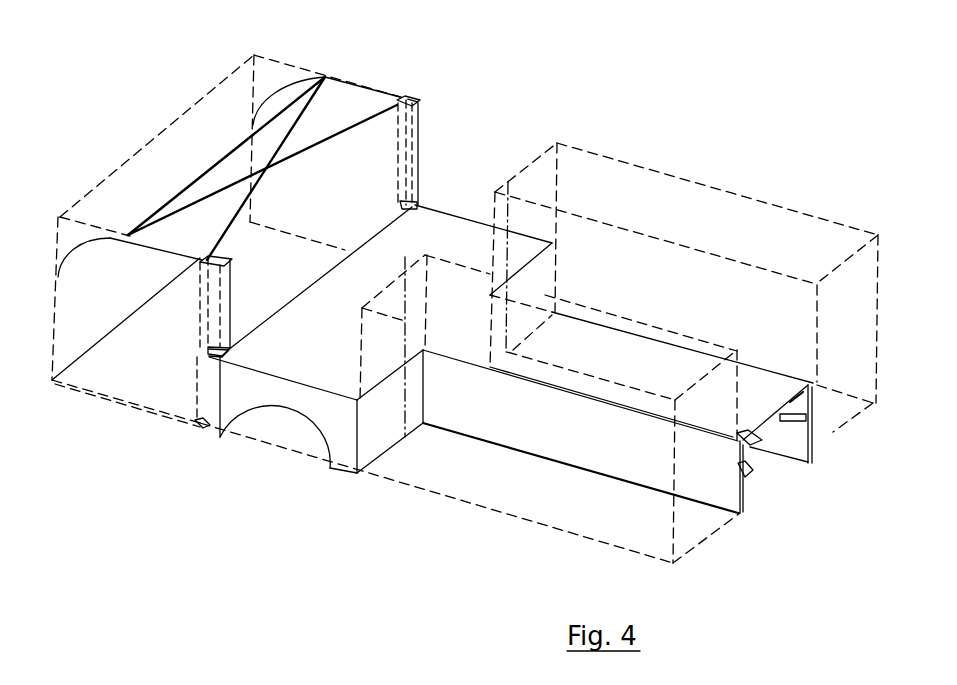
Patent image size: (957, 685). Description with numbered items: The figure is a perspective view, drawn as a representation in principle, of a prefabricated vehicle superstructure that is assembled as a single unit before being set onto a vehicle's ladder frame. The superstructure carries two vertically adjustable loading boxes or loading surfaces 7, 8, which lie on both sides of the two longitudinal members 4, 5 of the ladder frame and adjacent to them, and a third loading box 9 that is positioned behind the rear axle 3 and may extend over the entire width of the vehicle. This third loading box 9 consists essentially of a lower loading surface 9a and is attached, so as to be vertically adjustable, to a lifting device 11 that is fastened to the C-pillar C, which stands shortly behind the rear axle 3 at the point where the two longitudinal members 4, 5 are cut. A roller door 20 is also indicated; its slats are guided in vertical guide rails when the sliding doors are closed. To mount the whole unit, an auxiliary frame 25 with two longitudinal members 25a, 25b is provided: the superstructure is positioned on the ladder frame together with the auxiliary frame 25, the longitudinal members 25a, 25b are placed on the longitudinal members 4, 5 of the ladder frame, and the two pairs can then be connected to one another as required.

The rear axle 3 is at (333, 413).
The longitudinal member 4 is at (807, 463).
The longitudinal member 5 is at (742, 514).
The loading box 7 is at (635, 182).
The loading box 8 is at (542, 497).
The third loading box 9 is at (342, 98).
The lower loading surface 9a is at (143, 382).
The lifting device 11 is at (226, 296).
The roller door 20 is at (79, 243).
The auxiliary frame 25 is at (749, 441).
The longitudinal member 25a is at (745, 478).
The longitudinal member 25b is at (812, 420).
The C-pillar C is at (225, 358).